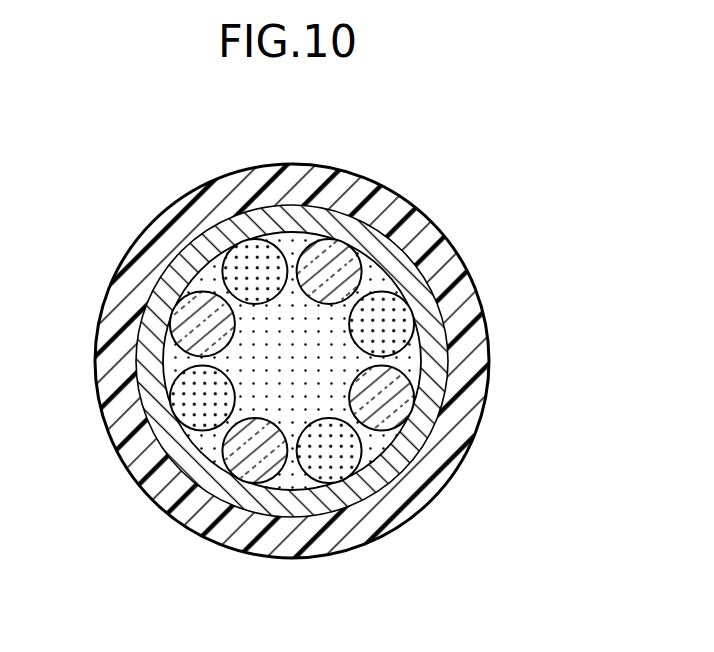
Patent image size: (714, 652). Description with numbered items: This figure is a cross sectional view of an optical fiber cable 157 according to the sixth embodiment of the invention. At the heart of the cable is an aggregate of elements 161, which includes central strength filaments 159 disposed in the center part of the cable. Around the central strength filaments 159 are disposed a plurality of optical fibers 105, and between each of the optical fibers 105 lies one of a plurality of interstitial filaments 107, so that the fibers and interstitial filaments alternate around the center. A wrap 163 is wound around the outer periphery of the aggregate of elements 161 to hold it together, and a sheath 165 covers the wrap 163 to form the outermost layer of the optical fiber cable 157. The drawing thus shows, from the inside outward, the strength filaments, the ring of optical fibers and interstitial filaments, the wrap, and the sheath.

The optical fiber cable 157 is at (500, 165).
The sheath 165 is at (463, 307).
The wrap 163 is at (377, 463).
The aggregate of elements 161 is at (287, 238).
The central strength filaments 159 is at (320, 372).
The optical fibers 105 is at (330, 267).
The interstitial filaments 107 is at (240, 262).